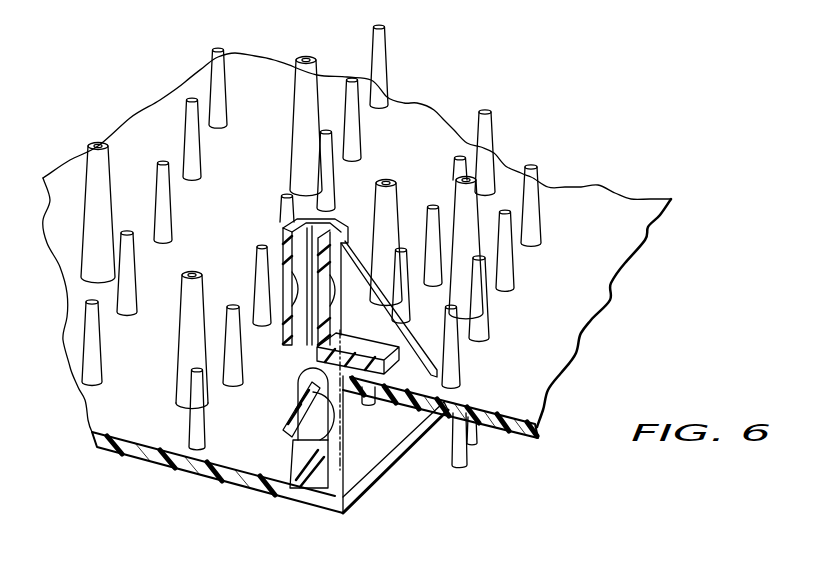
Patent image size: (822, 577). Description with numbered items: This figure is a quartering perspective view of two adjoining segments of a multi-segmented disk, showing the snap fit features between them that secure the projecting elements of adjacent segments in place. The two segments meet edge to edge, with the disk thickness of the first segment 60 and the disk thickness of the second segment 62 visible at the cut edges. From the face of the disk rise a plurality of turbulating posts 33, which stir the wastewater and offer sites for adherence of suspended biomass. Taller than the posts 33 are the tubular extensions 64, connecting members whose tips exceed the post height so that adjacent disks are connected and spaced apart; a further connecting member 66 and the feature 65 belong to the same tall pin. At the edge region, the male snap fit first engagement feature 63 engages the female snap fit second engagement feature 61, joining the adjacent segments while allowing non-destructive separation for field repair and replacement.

The turbulating posts 33 is at (215, 72).
The disk thickness of first segment 60 is at (508, 428).
The snap fit second engagement feature 61 is at (336, 222).
The disk thickness of second segment 62 is at (371, 490).
The snap fit first engagement feature 63 is at (290, 468).
The tubular extension 64 is at (182, 275).
The pin body 65 is at (180, 338).
The connecting member 66 is at (177, 402).